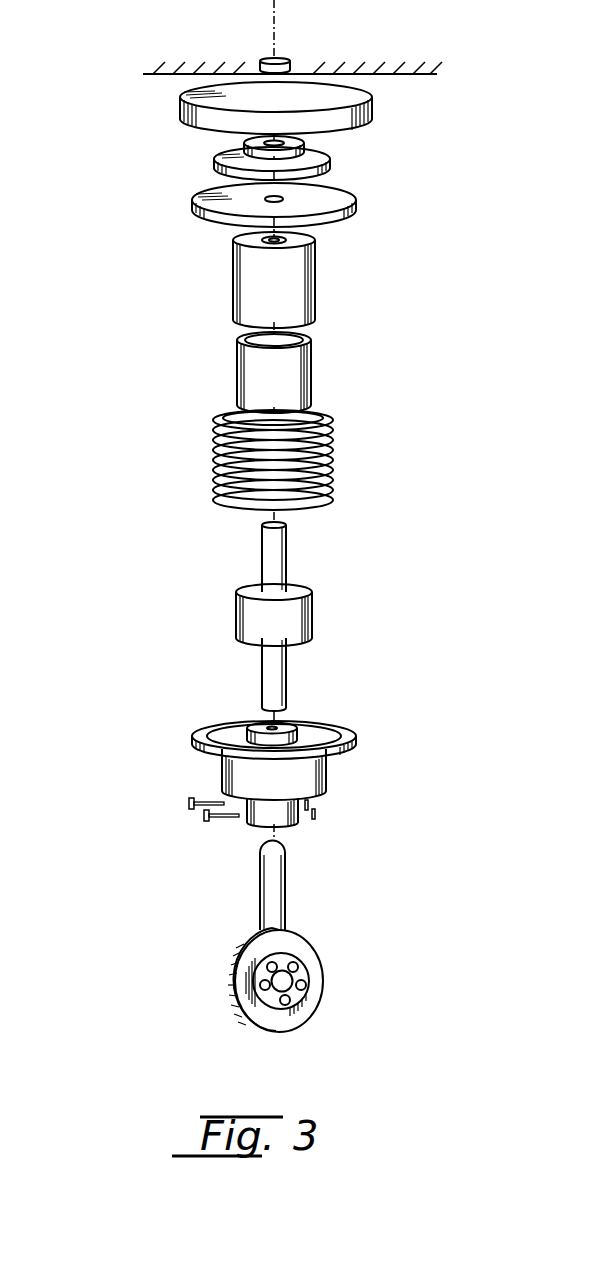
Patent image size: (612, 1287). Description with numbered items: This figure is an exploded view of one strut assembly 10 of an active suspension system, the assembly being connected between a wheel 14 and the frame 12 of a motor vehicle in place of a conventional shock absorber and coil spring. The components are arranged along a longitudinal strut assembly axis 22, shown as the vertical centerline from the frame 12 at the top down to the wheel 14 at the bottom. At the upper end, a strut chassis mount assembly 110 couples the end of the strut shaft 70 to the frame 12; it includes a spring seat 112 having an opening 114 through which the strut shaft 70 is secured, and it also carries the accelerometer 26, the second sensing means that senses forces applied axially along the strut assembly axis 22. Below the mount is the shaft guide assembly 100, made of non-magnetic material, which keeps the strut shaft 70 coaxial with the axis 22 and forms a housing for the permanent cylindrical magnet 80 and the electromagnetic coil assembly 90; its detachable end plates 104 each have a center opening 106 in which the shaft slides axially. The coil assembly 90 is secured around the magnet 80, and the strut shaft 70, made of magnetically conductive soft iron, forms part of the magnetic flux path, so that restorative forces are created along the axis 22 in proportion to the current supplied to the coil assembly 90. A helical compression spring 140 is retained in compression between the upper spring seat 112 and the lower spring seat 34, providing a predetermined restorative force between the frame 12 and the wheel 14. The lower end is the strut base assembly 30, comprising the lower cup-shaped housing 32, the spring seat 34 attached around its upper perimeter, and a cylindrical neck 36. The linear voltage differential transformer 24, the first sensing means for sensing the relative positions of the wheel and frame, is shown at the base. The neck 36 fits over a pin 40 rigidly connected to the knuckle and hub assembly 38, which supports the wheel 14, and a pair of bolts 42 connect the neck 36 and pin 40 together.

The strut assembly 10 is at (138, 638).
The frame 12 is at (410, 70).
The wheel 14 is at (265, 980).
The strut assembly axis 22 is at (276, 30).
The linear voltage differential transformer 24 is at (298, 736).
The accelerometer 26 is at (240, 143).
The strut base assembly 30 is at (427, 725).
The lower cup-shaped housing 32 is at (333, 774).
The spring seat 34 is at (363, 736).
The cylindrical neck 36 is at (302, 826).
The knuckle and hub assembly 38 is at (232, 968).
The pin 40 is at (287, 898).
The bolts 42 is at (180, 811).
The strut shaft 70 is at (290, 547).
The permanent cylindrical magnet 80 is at (316, 612).
The electromagnetic coil assembly 90 is at (316, 377).
The shaft guide assembly 100 is at (322, 278).
The end plates 104 is at (232, 241).
The center opening 106 is at (266, 240).
The strut chassis mount assembly 110 is at (418, 95).
The spring seat 112 is at (362, 204).
The opening 114 is at (268, 198).
The helical compression spring 140 is at (337, 468).